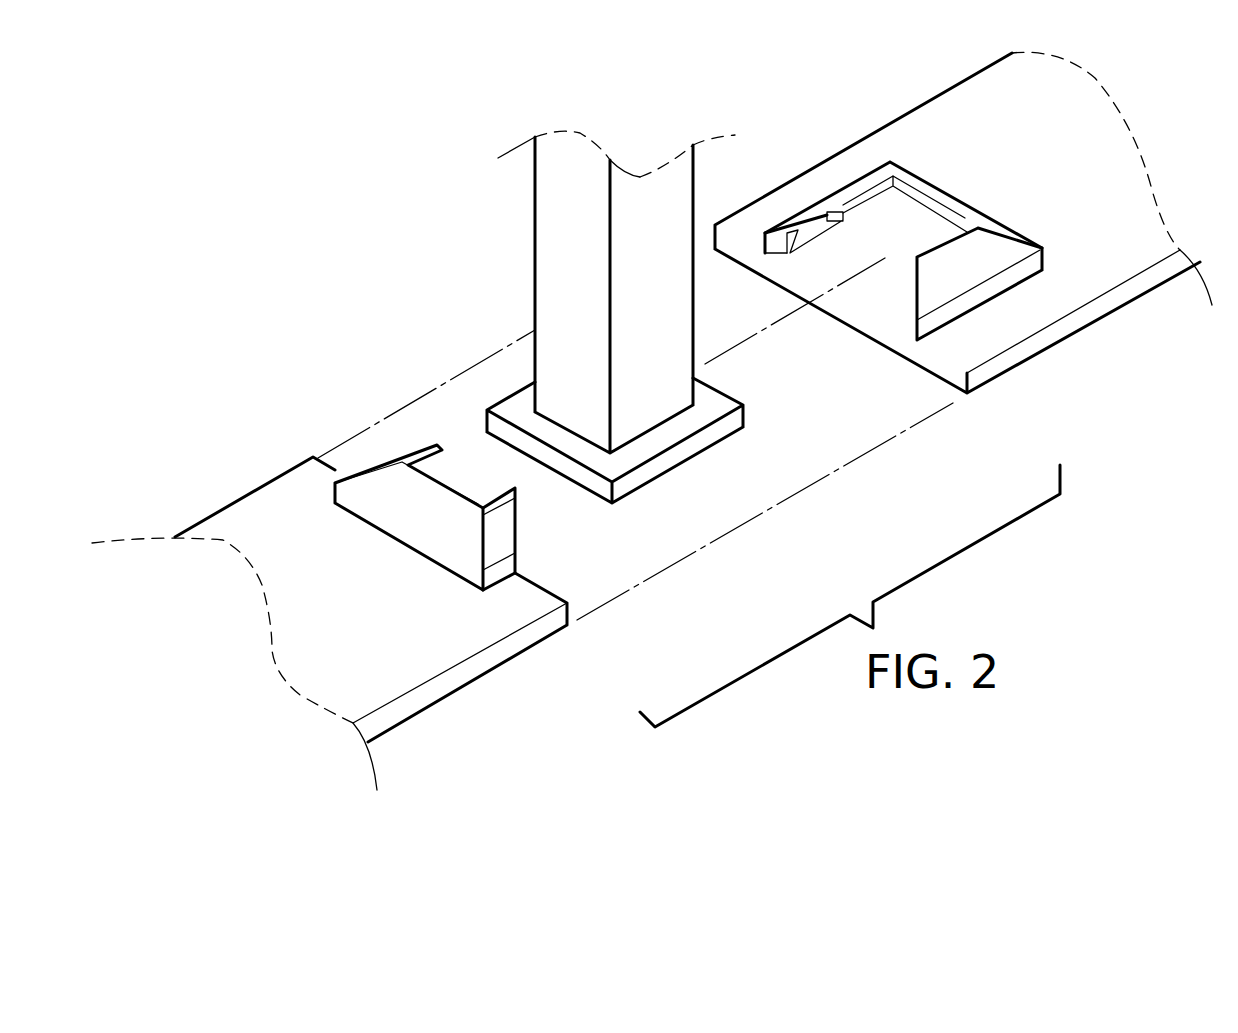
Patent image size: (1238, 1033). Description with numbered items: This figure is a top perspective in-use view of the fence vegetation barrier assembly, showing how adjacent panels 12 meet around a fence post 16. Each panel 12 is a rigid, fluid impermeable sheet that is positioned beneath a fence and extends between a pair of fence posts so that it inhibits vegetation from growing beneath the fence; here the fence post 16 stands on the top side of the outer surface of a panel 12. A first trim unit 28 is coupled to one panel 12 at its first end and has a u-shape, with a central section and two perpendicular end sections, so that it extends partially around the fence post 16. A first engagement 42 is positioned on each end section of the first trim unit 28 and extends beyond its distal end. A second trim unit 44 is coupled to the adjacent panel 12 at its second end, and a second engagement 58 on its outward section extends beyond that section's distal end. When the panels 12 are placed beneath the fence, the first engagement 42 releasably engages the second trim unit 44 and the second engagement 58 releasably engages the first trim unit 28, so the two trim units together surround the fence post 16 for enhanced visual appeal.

The panel 12 is at (907, 112).
The fence post 16 is at (535, 312).
The first trim unit 28 is at (838, 165).
The first engagement 42 is at (820, 224).
The second trim unit 44 is at (362, 446).
The second engagement 58 is at (517, 518).